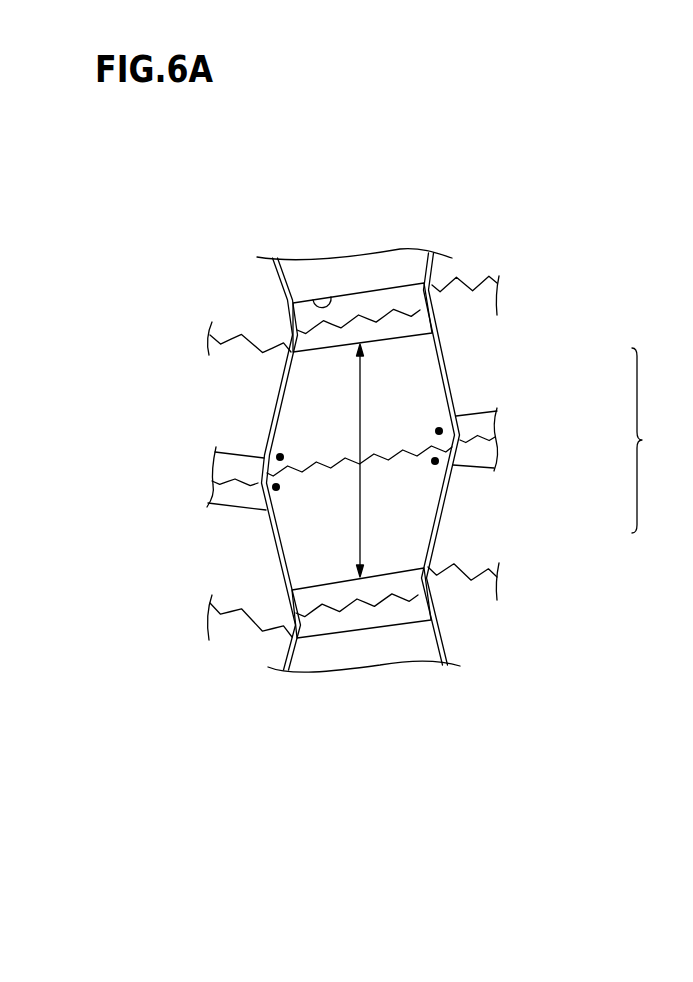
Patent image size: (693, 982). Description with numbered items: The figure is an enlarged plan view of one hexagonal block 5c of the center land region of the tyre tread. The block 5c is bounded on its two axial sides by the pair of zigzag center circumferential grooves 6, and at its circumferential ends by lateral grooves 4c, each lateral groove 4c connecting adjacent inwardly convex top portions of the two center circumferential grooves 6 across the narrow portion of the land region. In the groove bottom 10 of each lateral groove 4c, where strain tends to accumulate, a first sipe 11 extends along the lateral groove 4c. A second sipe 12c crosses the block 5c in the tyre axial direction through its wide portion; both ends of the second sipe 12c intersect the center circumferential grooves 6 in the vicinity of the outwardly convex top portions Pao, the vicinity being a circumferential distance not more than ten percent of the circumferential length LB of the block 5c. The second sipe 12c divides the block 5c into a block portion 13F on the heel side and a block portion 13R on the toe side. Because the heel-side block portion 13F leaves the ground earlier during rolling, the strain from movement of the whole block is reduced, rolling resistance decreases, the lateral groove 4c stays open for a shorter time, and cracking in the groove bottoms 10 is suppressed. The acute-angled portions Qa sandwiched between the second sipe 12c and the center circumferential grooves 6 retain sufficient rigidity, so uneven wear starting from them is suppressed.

The center circumferential groove 6 is at (284, 280).
The lateral groove 4c is at (331, 297).
The groove bottom 10 is at (368, 307).
The first sipe 11 is at (398, 310).
The second sipe 12c is at (343, 458).
The block portion on heel side 13F is at (413, 392).
The block portion on toe side 13R is at (403, 497).
The hexagonal block 5c is at (653, 440).
The acute-angled portion Qa is at (280, 457).
The top portion convex outwardly Pao is at (254, 490).
The circumferential length of hexagonal block LB is at (362, 528).